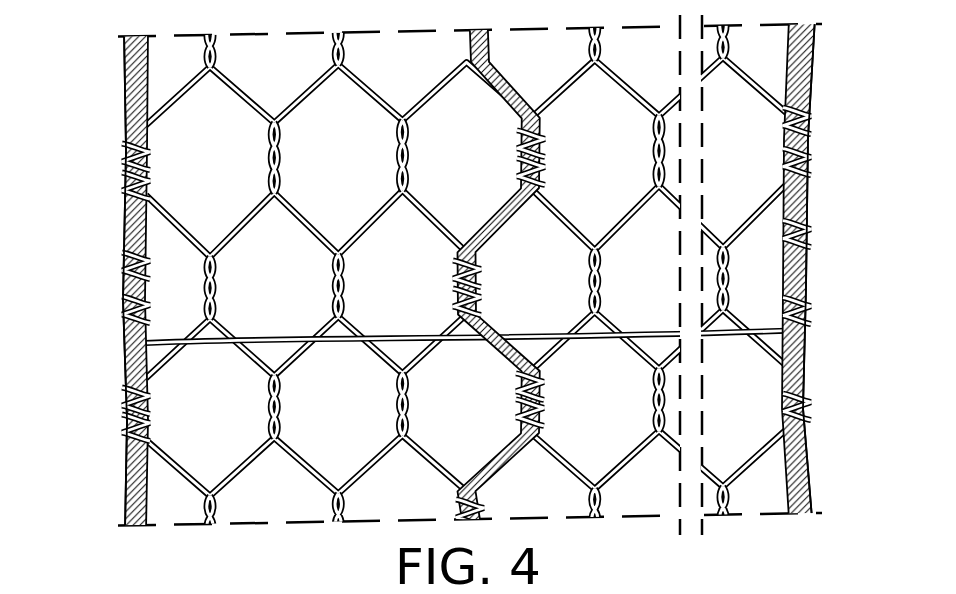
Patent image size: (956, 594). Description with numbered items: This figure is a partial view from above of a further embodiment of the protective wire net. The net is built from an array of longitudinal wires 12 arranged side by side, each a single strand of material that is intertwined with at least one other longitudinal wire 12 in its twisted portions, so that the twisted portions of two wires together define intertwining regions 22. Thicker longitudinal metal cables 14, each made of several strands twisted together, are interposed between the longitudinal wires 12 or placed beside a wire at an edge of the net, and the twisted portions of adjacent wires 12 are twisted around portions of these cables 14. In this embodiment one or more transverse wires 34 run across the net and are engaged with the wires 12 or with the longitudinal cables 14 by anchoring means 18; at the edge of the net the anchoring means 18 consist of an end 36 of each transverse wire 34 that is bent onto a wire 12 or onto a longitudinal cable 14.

The longitudinal wire 12 is at (243, 95).
The longitudinal metal cable 14 is at (139, 82).
The anchoring means 18 is at (111, 260).
The intertwining region 22 is at (221, 280).
The transverse wire 34 is at (268, 339).
The end of transverse wire 36 is at (144, 311).